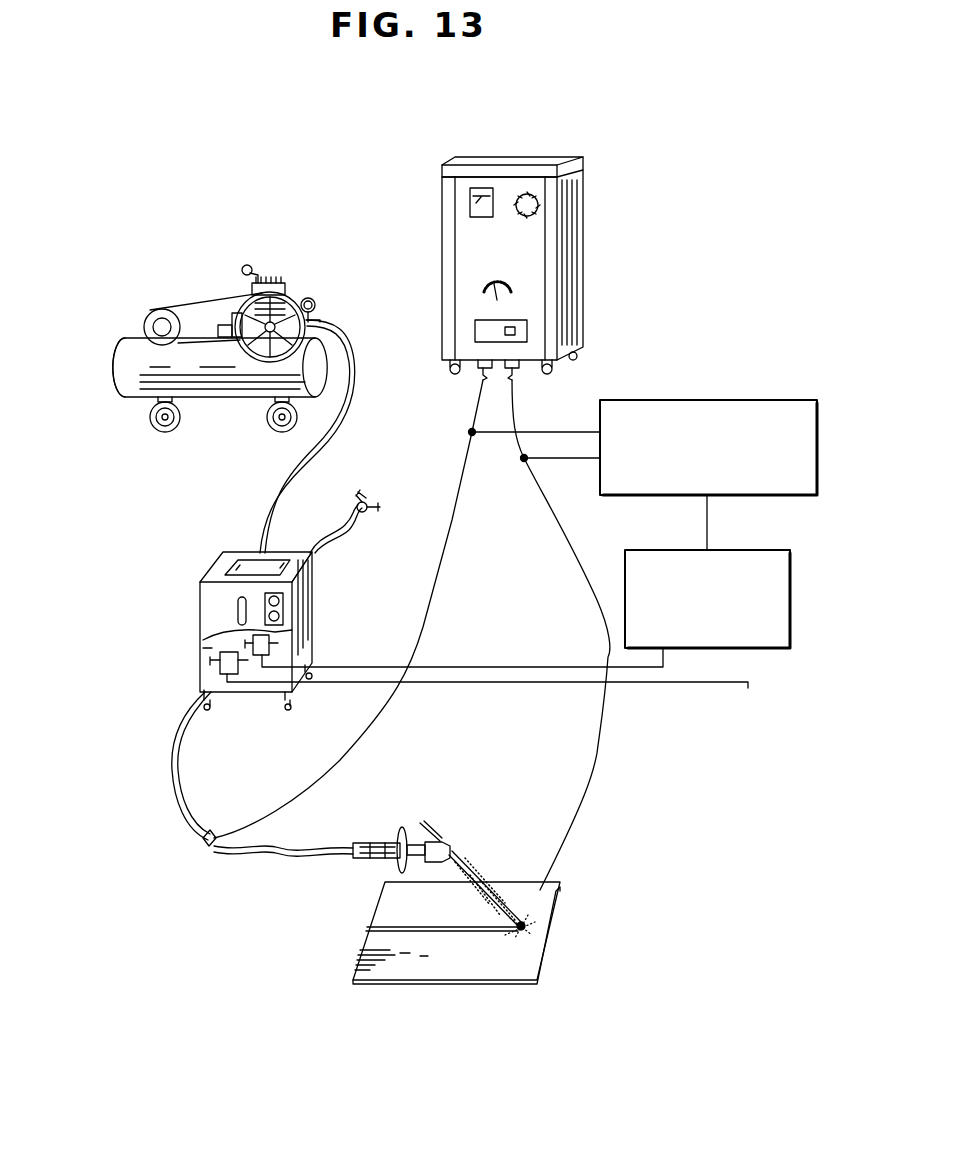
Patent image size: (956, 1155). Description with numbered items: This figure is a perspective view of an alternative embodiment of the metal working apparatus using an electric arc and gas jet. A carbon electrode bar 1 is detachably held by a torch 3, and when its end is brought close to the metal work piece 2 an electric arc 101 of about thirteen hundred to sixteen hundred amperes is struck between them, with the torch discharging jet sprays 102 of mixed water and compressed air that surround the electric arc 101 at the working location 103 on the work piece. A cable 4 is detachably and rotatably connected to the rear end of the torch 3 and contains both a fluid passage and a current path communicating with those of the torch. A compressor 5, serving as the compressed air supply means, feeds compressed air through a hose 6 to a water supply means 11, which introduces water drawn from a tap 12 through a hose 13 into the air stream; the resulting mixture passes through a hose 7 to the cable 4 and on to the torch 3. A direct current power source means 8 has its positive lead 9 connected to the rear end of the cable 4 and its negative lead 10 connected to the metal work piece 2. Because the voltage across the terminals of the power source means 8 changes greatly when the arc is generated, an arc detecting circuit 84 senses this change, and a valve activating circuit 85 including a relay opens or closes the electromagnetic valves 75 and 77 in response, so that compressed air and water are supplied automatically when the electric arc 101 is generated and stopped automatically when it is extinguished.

The carbon electrode bar 1 is at (462, 852).
The metal work piece 2 is at (452, 975).
The torch 3 is at (418, 842).
The cable 4 is at (263, 852).
The compressor 5 is at (221, 392).
The hose 6 is at (343, 428).
The hose 7 is at (172, 772).
The direct current power source means 8 is at (572, 255).
The positive lead 9 is at (423, 628).
The negative lead 10 is at (597, 760).
The water supply means 11 is at (203, 630).
The tap 12 is at (368, 496).
The hose 13 is at (332, 530).
The electromagnetic valve 75 is at (270, 650).
The electromagnetic valve 77 is at (220, 658).
The arc detecting circuit 84 is at (740, 405).
The valve activating circuit 85 is at (762, 637).
The electric arc 101 is at (527, 923).
The jet sprays 102 is at (498, 897).
The weld groove 103 is at (382, 913).